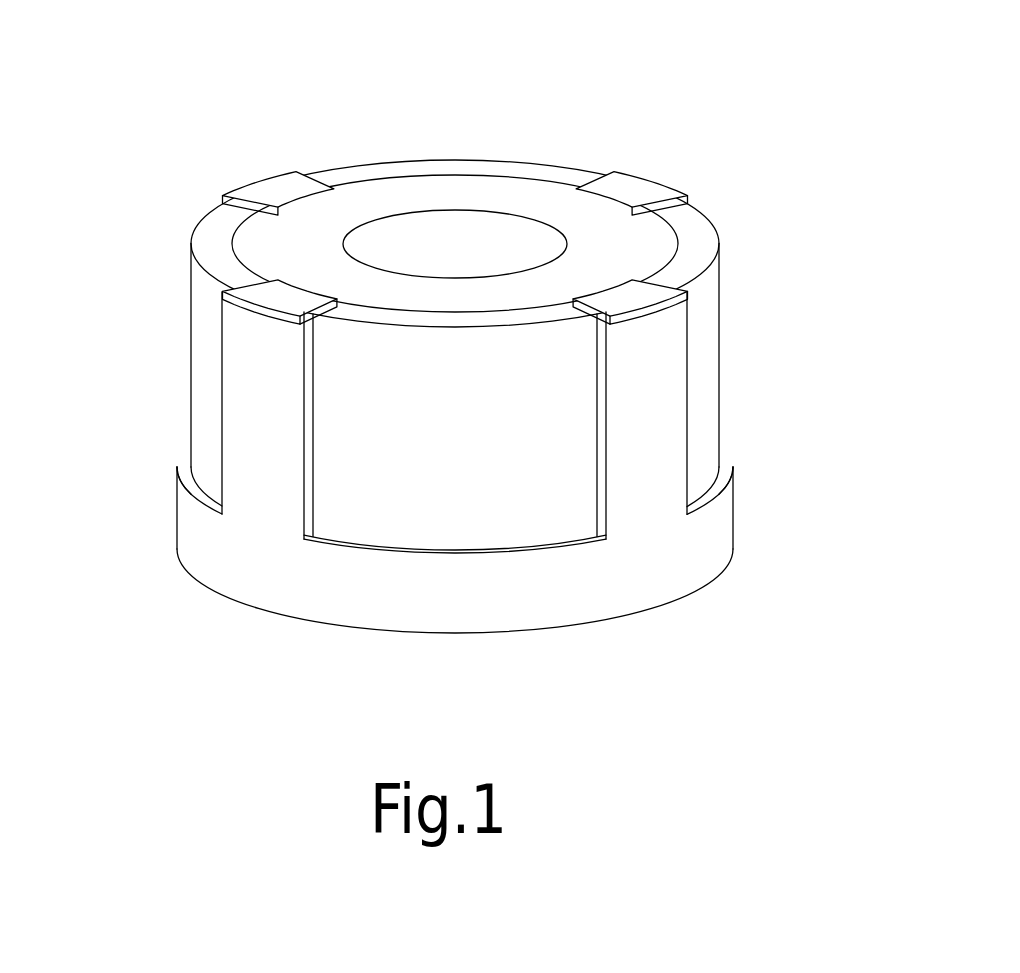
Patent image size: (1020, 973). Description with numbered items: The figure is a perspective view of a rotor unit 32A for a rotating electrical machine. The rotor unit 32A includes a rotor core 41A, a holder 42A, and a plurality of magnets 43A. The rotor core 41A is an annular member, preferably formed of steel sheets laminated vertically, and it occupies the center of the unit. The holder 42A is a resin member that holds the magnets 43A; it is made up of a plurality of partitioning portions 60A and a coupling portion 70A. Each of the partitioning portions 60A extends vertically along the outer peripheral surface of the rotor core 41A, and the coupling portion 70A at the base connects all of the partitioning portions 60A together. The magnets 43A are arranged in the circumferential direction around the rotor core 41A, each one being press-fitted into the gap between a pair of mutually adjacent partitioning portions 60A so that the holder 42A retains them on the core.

The rotor unit 32A is at (460, 346).
The rotor core 41A is at (510, 195).
The holder 42A is at (762, 530).
The magnets 43A is at (205, 343).
The partitioning portions 60A is at (250, 425).
The coupling portion 70A is at (555, 588).